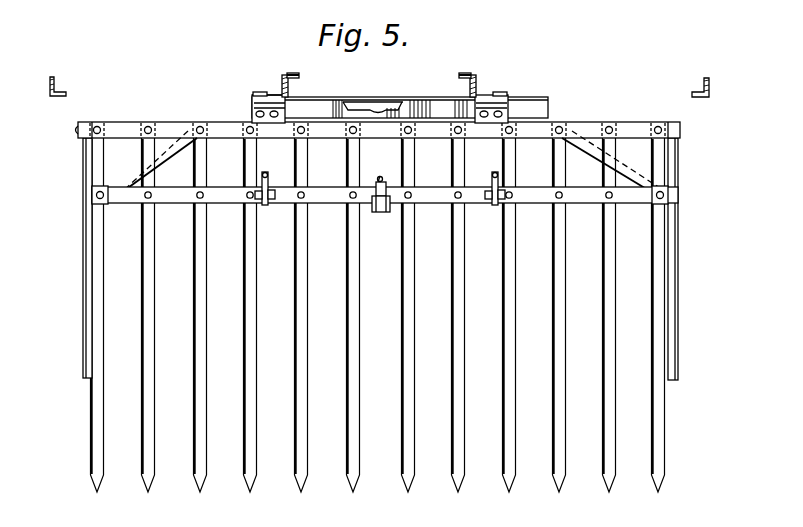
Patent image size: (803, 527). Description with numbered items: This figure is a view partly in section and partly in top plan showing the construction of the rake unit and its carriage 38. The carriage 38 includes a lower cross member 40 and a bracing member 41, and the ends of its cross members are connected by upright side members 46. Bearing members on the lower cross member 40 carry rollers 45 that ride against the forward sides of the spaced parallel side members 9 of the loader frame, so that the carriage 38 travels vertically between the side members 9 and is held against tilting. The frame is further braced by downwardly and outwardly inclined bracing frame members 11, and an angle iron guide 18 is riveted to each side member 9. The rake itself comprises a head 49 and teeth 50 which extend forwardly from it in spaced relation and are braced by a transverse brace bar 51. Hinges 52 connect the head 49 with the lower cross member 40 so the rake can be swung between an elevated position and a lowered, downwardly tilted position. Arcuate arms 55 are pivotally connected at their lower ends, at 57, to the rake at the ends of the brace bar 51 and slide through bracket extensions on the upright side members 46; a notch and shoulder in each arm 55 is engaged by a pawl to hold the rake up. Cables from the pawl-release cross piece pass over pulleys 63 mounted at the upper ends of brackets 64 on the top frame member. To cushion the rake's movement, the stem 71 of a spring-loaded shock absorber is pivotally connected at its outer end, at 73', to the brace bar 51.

The side members 9 is at (282, 92).
The bracing frame members 11 is at (68, 80).
The angle iron guide 18 is at (300, 77).
The carriage 38 is at (378, 70).
The lower cross member 40 is at (430, 100).
The bracing member 41 is at (398, 100).
The rollers 45 is at (318, 92).
The upright side members 46 is at (258, 95).
The head 49 is at (630, 130).
The teeth 50 is at (303, 492).
The transverse brace bar 51 is at (432, 203).
The hinges 52 is at (260, 106).
The arcuate arm 55 is at (267, 178).
The pivotal connection 57 is at (267, 205).
The pulleys 63 is at (92, 521).
The brackets 64 is at (356, 332).
The stem 71 is at (388, 164).
The pivotal connection of stem 73' is at (376, 224).